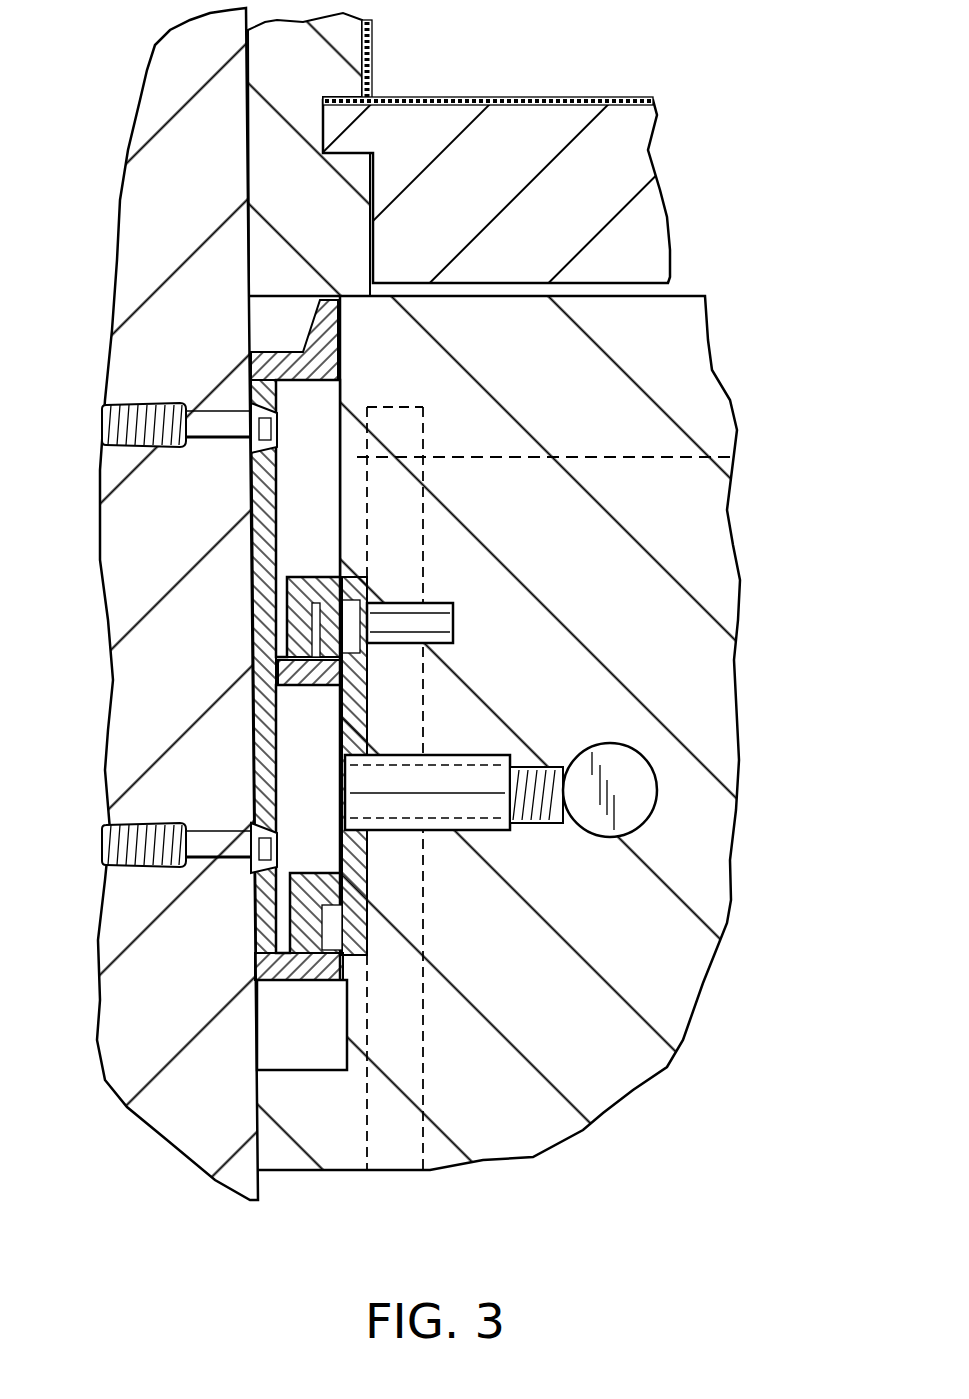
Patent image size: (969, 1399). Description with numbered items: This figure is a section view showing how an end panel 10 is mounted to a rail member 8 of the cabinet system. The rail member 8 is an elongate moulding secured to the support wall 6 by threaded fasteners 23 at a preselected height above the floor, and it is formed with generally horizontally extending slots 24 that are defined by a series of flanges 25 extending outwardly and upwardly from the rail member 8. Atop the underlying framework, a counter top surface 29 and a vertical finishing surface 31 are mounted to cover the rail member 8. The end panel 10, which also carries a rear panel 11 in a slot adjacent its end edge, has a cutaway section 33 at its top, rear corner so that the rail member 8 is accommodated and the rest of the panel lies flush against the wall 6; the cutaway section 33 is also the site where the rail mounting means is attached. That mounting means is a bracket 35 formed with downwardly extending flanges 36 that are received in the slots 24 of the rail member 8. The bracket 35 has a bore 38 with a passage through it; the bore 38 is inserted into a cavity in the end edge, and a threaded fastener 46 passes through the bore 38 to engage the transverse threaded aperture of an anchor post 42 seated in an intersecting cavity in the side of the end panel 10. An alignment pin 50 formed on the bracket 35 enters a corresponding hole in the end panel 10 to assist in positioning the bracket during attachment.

The wall 6 is at (193, 43).
The rail member 8 is at (303, 558).
The end panel 10 is at (710, 561).
The rear panel 11 is at (365, 503).
The threaded fastener 23 is at (127, 403).
The slot 24 is at (300, 478).
The flange 25 is at (313, 323).
The counter top surface 29 is at (507, 120).
The vertical finishing surface 31 is at (377, 43).
The cutaway section 33 is at (307, 1022).
The bracket 35 is at (352, 888).
The flange 36 is at (290, 592).
The bore 38 is at (500, 842).
The anchor post 42 is at (630, 800).
The threaded fastener 46 is at (537, 825).
The alignment pin 50 is at (452, 612).